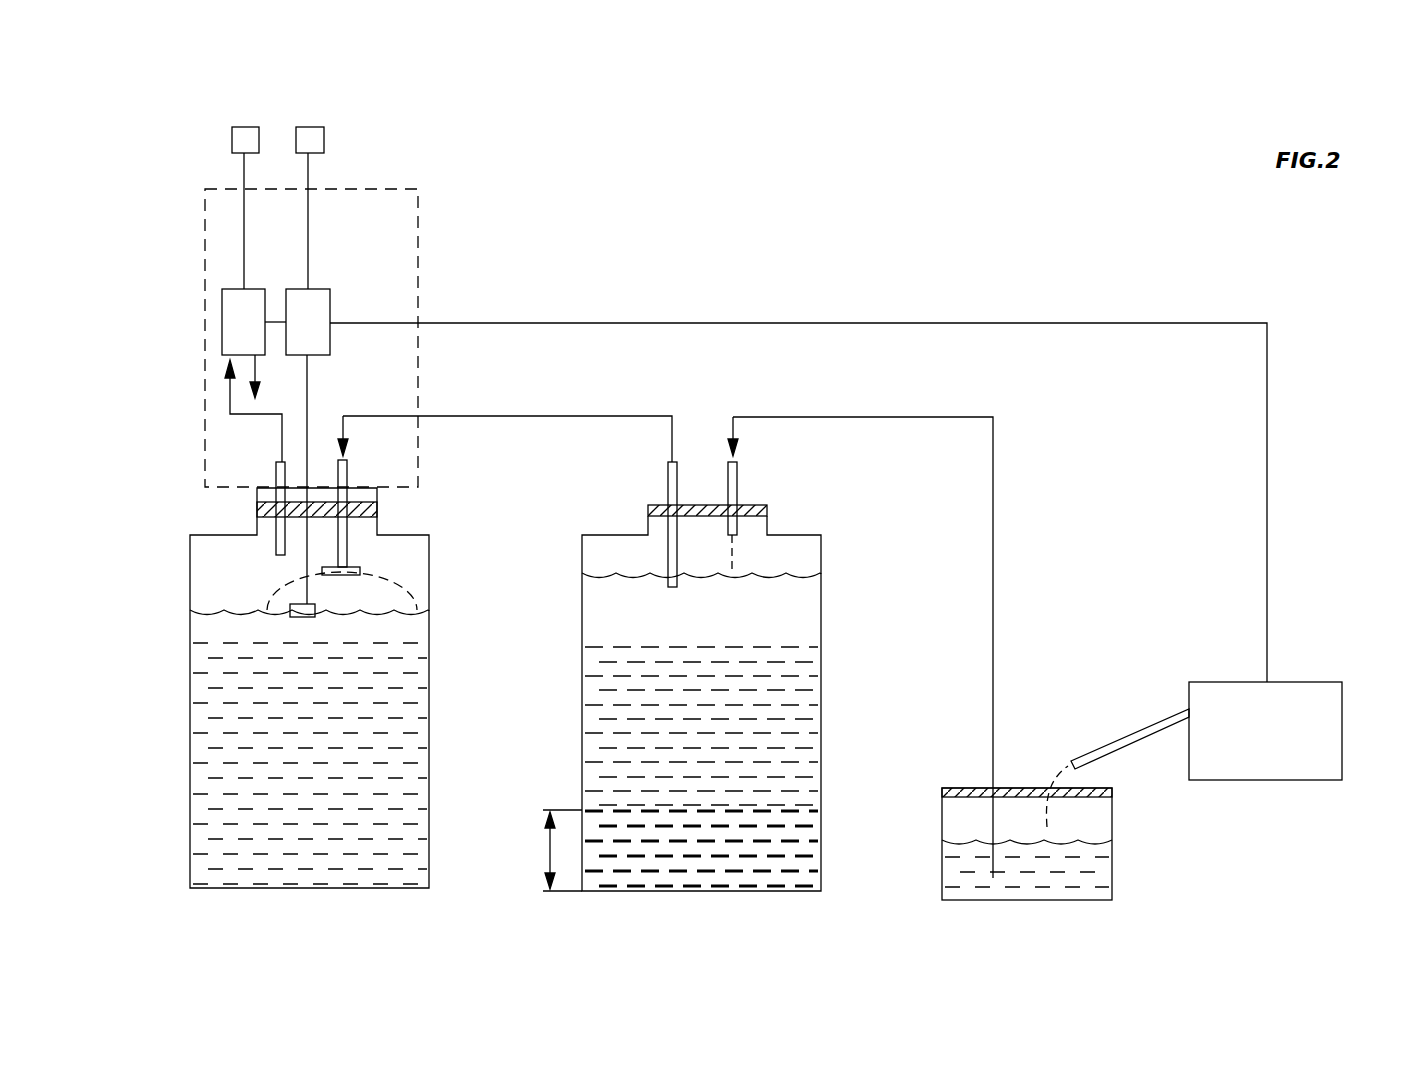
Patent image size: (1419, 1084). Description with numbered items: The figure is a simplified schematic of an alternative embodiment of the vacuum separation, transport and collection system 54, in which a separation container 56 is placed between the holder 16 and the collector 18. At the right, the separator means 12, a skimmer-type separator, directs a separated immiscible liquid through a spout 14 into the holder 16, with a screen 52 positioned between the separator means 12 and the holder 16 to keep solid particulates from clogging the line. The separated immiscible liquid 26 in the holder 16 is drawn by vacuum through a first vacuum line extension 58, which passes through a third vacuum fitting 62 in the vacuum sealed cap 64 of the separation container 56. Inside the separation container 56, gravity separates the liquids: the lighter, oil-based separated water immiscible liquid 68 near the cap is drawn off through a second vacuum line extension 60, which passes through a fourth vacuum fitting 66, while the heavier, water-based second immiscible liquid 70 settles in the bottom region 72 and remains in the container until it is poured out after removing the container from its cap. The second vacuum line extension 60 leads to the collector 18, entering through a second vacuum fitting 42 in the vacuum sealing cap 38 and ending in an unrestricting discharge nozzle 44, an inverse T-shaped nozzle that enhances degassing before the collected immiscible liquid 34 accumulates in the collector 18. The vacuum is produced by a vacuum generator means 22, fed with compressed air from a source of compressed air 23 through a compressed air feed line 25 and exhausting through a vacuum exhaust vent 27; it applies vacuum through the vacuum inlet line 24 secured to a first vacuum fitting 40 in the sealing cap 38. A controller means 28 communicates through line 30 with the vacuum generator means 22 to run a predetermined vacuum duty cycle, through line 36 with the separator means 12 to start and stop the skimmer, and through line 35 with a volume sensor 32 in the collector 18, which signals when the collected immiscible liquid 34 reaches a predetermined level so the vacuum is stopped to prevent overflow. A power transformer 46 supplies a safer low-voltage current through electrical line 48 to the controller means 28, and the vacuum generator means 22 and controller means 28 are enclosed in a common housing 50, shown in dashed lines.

The separator means 12 is at (1342, 732).
The spout 14 is at (1128, 738).
The holder 16 is at (1112, 870).
The collector 18 is at (190, 718).
The vacuum generator means 22 is at (240, 330).
The source of compressed air 23 is at (238, 142).
The vacuum inlet line 24 is at (282, 444).
The compressed air feed line 25 is at (244, 250).
The separated immiscible liquid 26 is at (990, 885).
The vacuum exhaust vent 27 is at (257, 363).
The controller means 28 is at (330, 302).
The line 30 is at (279, 320).
The volume sensor 32 is at (297, 617).
The collected immiscible liquid 34 is at (400, 723).
The line 35 is at (312, 367).
The line 36 is at (907, 323).
The vacuum sealing cap 38 is at (377, 508).
The first vacuum fitting 40 is at (276, 470).
The second vacuum fitting 42 is at (347, 463).
The unrestricting discharge nozzle 44 is at (357, 568).
The power transformer 46 is at (310, 135).
The electrical line 48 is at (308, 235).
The common housing 50 is at (418, 222).
The screen 52 is at (965, 788).
The vacuum separation, transport and collection system 54 is at (1180, 236).
The separation container 56 is at (821, 648).
The first vacuum line extension 58 is at (905, 417).
The second vacuum line extension 60 is at (573, 416).
The third vacuum fitting 62 is at (737, 468).
The vacuum sealed cap 64 is at (648, 512).
The fourth vacuum fitting 66 is at (668, 472).
The separated water immiscible liquid 68 is at (615, 603).
The second immiscible liquid 70 is at (782, 860).
The bottom region 72 is at (550, 850).